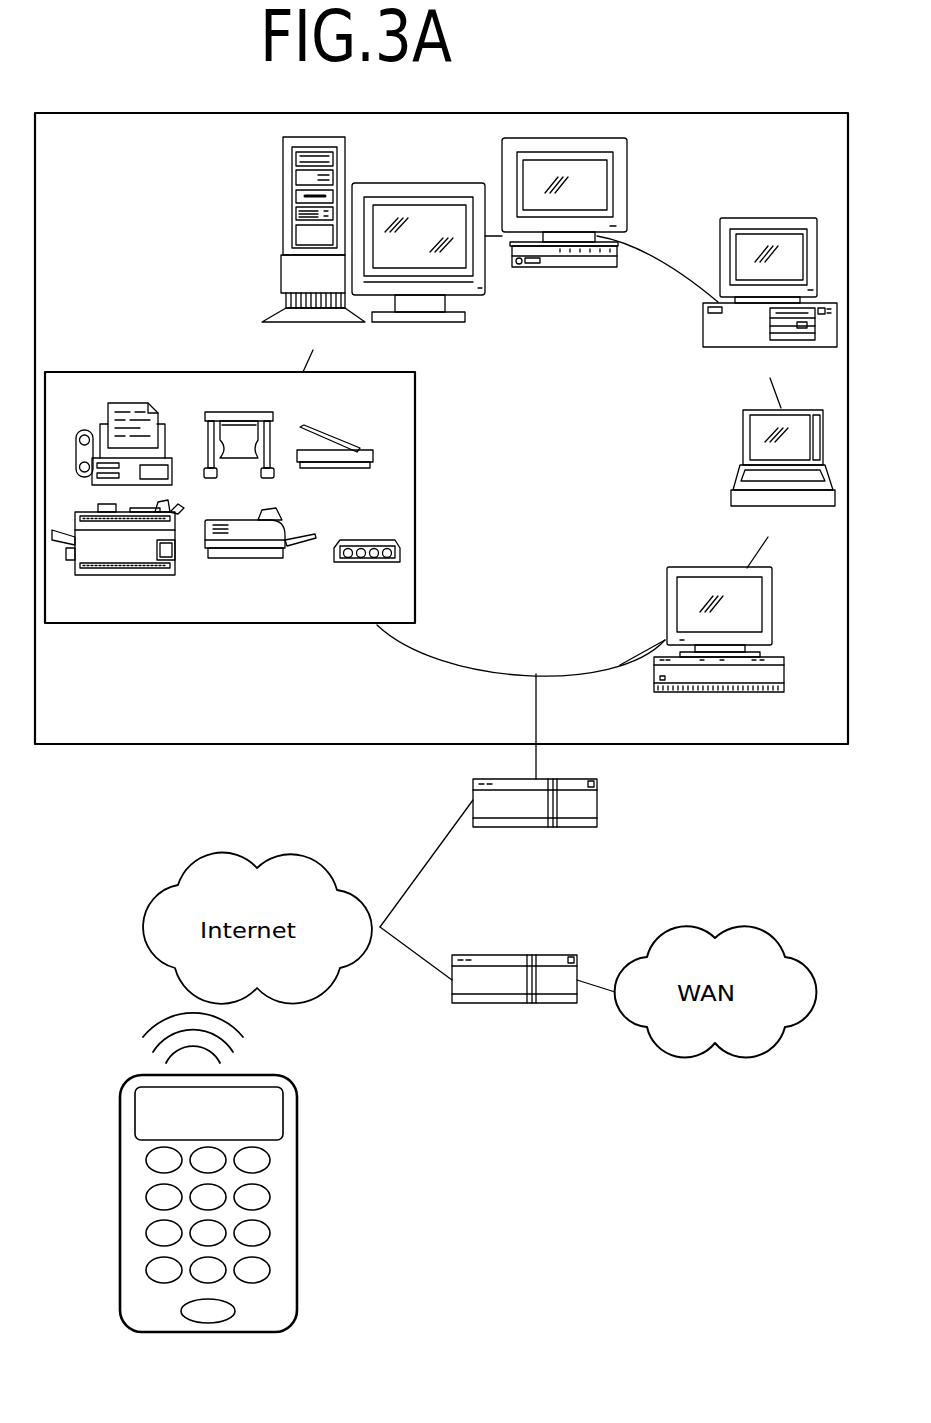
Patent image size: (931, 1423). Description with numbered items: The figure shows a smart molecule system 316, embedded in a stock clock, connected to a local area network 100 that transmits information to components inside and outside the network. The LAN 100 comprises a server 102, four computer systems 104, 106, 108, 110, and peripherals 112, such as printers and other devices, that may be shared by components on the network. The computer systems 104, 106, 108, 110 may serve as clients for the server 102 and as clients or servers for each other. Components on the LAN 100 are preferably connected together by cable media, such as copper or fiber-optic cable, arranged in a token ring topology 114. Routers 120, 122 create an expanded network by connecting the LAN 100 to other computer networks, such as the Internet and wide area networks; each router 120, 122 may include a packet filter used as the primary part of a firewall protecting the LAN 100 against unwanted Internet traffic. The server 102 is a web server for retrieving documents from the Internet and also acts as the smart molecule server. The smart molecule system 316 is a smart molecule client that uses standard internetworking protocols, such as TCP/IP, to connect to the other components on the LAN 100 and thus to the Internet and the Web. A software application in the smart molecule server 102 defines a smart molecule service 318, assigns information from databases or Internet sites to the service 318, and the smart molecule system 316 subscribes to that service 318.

The local area network 100 is at (347, 758).
The server 102 is at (335, 253).
The computer system 104 is at (573, 230).
The computer system 106 is at (751, 310).
The computer system 108 is at (753, 486).
The computer system 110 is at (772, 712).
The peripherals 112 is at (265, 615).
The token ring topology 114 is at (440, 648).
The router 120 is at (586, 850).
The router 122 is at (554, 1028).
The smart molecule system 316 is at (283, 1213).
The smart molecule service 318 is at (275, 229).